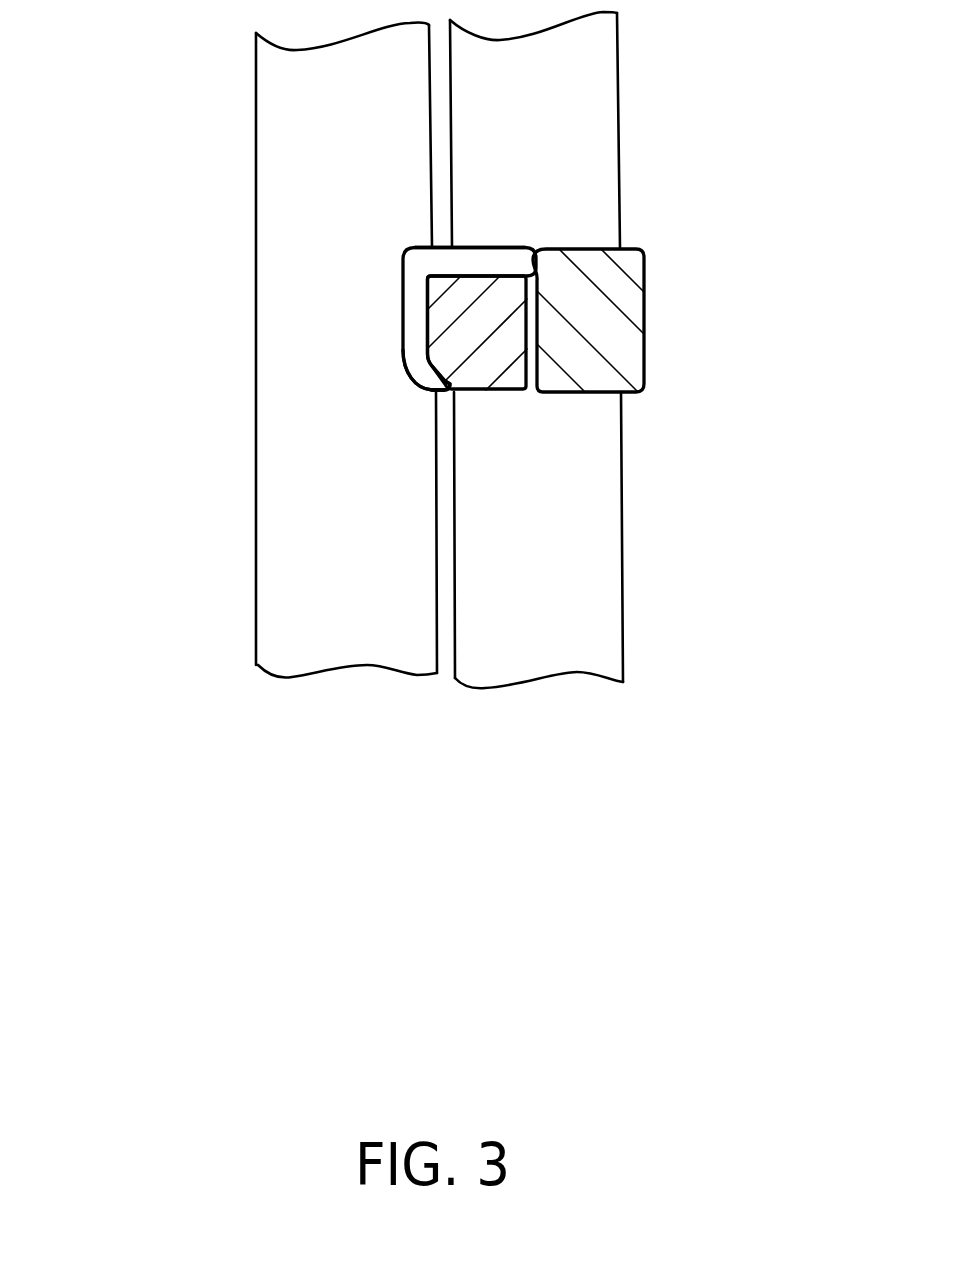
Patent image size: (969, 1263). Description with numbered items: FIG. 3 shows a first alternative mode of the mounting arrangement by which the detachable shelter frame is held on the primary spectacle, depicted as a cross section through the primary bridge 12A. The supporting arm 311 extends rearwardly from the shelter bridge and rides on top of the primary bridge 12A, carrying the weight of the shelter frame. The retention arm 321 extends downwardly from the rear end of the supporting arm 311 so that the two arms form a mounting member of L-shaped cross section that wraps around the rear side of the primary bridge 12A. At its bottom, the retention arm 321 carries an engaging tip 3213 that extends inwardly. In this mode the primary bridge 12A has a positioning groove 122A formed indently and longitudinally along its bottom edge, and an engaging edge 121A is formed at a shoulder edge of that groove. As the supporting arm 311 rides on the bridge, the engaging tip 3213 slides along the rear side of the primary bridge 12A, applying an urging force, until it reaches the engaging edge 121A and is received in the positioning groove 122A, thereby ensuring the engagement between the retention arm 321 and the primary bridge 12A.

The retention arm 321 is at (410, 313).
The supporting arm 311 is at (483, 260).
The engaging tip 3213 is at (423, 372).
The positioning groove 122A is at (441, 417).
The primary bridge 12A is at (493, 368).
The engaging edge 121A is at (447, 356).